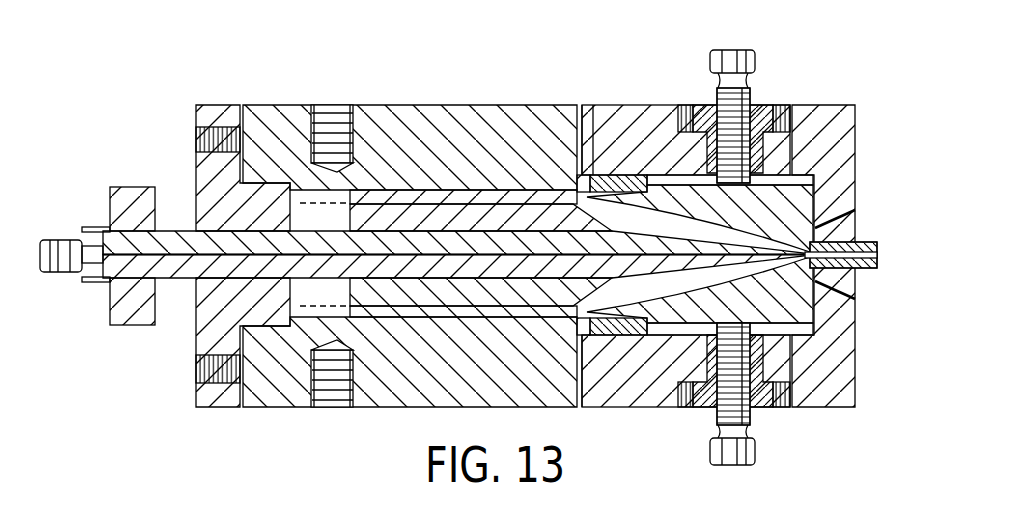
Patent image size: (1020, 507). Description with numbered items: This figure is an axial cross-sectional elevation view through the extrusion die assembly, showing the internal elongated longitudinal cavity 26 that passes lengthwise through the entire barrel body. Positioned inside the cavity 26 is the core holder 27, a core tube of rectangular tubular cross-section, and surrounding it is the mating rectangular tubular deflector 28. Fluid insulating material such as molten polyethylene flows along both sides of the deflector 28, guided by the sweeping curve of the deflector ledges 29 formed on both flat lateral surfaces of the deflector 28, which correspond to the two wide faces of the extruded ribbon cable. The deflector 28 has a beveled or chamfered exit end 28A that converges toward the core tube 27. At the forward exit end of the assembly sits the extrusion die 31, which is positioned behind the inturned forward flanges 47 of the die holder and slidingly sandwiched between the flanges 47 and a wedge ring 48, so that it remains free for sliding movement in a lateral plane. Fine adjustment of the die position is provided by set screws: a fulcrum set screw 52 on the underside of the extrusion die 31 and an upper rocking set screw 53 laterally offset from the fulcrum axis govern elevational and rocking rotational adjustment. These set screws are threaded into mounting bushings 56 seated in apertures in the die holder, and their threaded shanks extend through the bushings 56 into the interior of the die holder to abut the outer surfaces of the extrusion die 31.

The internal elongated longitudinal cavity 26 is at (420, 312).
The core holder 27 is at (458, 214).
The deflector 28 is at (498, 204).
The chamfered exit end 28A is at (592, 135).
The deflector ledges 29 is at (355, 188).
The extrusion die 31 is at (878, 238).
The inturned forward flanges 47 is at (855, 223).
The wedge ring 48 is at (613, 185).
The fulcrum set screw 52 is at (757, 447).
The upper rocking set screw 53 is at (757, 57).
The mounting bushings 56 is at (716, 116).